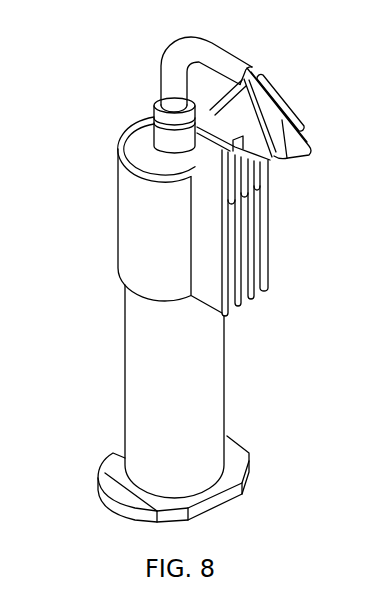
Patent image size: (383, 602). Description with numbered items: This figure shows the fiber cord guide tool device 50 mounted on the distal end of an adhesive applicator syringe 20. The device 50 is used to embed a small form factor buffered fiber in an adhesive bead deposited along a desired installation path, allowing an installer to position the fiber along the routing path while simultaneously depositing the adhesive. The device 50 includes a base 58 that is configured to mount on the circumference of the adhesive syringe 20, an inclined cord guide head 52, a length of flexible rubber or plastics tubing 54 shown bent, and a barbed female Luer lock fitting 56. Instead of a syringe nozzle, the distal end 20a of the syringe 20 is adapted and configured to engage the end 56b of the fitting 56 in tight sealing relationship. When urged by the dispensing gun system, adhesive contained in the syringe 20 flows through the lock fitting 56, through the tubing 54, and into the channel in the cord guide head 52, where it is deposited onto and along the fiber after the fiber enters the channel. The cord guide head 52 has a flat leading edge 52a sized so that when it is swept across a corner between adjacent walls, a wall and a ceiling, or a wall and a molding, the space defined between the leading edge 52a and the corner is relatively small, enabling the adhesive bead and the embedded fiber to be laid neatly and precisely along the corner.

The adhesive syringe 20 is at (217, 375).
The distal end of the syringe 20a is at (130, 153).
The cord guide tool device 50 is at (112, 216).
The cord guide head 52 is at (287, 100).
The flat leading edge 52a is at (243, 73).
The flexible tubing 54 is at (214, 48).
The Luer lock fitting 56 is at (162, 98).
The opposite end of the fitting 56b is at (158, 132).
The base 58 is at (216, 205).